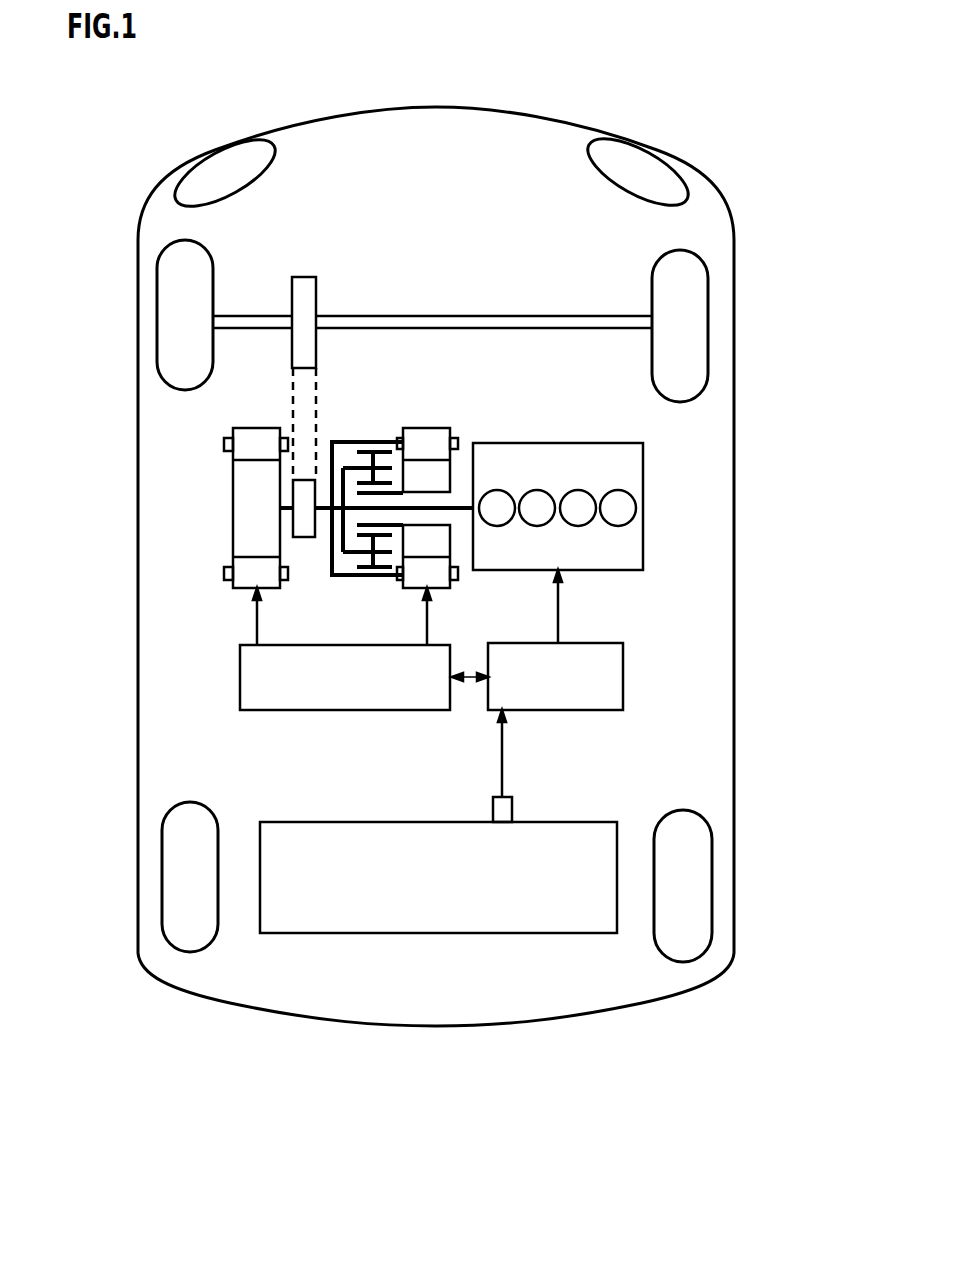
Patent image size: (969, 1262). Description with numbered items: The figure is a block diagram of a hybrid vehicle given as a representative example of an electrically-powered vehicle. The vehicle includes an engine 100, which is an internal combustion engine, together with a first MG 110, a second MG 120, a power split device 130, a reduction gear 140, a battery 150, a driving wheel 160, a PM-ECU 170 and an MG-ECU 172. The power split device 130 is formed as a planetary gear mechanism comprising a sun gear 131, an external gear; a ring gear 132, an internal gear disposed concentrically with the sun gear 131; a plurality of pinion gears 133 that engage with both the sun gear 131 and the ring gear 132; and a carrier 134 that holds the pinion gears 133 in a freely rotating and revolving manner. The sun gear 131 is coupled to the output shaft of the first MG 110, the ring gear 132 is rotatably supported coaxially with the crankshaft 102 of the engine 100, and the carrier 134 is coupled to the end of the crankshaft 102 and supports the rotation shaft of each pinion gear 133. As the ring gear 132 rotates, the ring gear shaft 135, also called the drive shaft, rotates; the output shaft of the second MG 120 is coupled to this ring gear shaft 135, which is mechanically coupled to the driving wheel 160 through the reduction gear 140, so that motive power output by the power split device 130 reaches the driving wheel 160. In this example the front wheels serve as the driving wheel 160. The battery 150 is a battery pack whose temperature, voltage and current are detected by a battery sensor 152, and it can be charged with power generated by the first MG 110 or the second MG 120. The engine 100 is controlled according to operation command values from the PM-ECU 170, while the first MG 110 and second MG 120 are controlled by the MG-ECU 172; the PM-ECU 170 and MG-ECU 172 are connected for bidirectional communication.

The engine 100 is at (508, 443).
The crankshaft 102 is at (458, 513).
The first MG 110 is at (427, 428).
The second MG 120 is at (233, 508).
The power split device 130 is at (399, 382).
The sun gear 131 is at (395, 490).
The ring gear 132 is at (347, 442).
The pinion gear 133 is at (380, 557).
The carrier 134 is at (352, 553).
The ring gear shaft 135 is at (317, 513).
The reduction gear 140 is at (306, 261).
The battery 150 is at (410, 932).
The battery sensor 152 is at (493, 803).
The driving wheel 160 is at (158, 327).
The PM-ECU 170 is at (593, 643).
The MG-ECU 172 is at (240, 680).